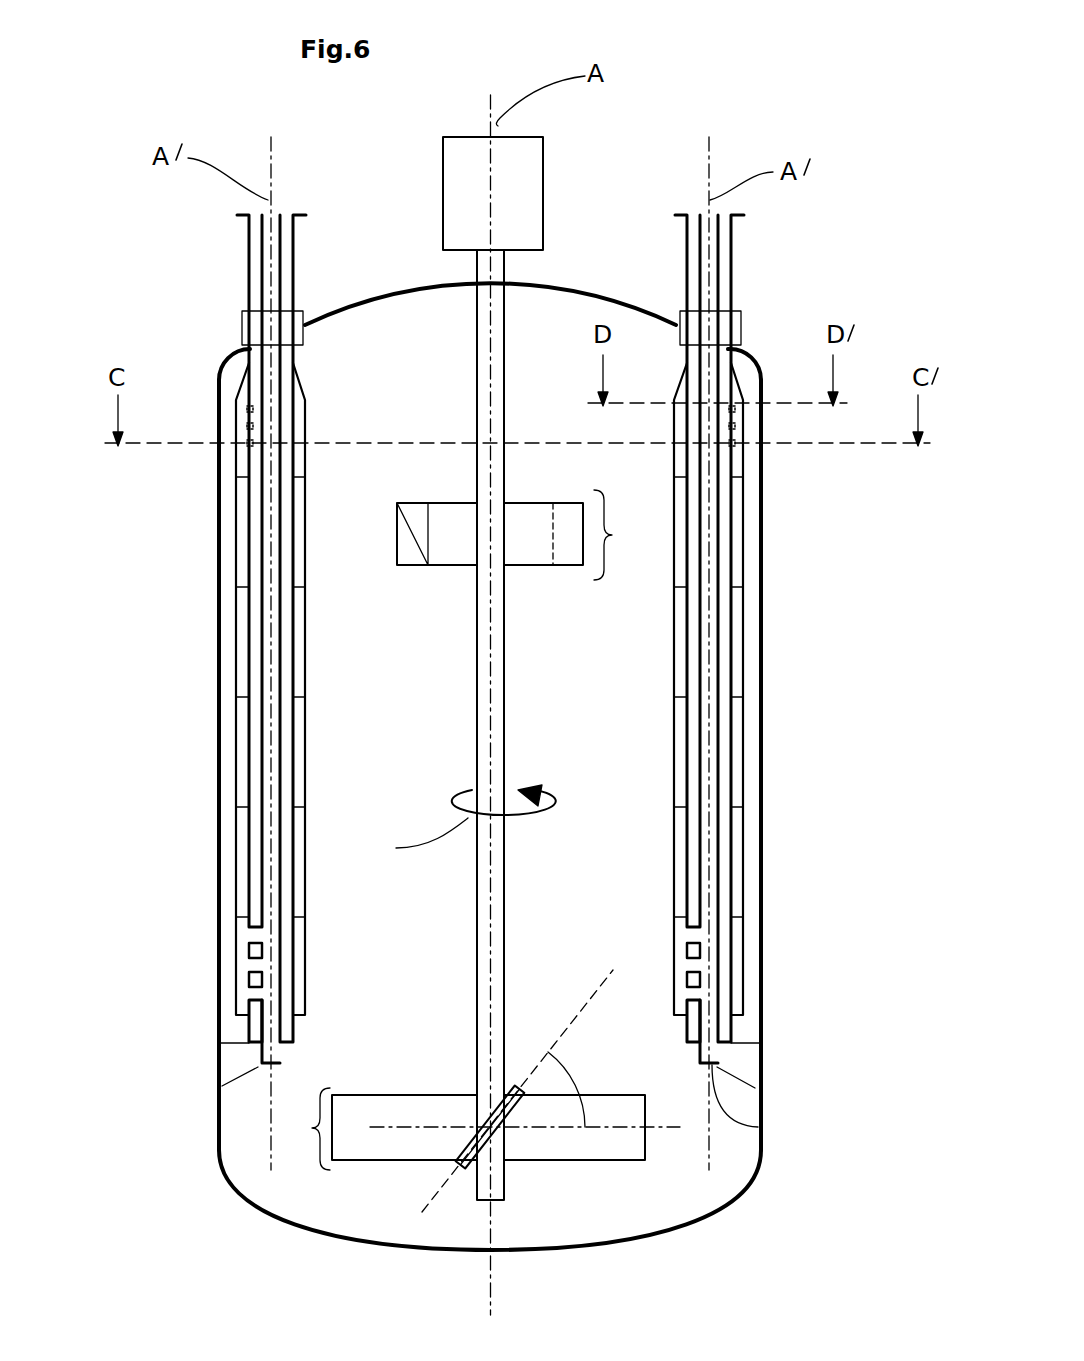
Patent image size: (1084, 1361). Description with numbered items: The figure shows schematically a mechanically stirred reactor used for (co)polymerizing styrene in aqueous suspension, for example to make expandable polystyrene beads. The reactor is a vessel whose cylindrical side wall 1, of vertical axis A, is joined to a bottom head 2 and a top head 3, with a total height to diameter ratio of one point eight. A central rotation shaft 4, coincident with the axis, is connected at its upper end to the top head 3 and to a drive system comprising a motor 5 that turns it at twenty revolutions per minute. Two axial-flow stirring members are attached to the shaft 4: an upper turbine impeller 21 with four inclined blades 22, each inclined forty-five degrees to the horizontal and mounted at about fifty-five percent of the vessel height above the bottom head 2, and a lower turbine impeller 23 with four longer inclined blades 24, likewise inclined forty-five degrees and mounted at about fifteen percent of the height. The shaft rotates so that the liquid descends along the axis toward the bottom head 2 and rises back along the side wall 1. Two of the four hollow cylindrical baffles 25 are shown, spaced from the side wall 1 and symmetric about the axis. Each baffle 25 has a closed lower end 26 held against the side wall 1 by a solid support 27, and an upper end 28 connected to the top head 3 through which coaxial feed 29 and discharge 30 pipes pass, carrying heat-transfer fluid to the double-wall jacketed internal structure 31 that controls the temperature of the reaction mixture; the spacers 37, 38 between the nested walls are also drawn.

The side wall 1 is at (762, 655).
The bottom head 2 is at (562, 1245).
The top head 3 is at (388, 290).
The central rotation shaft 4 is at (478, 900).
The motor 5 is at (465, 183).
The upper turbine impeller 21 is at (523, 535).
The inclined blades 22 is at (410, 513).
The lower turbine impeller 23 is at (478, 1129).
The inclined blades 24 is at (388, 1110).
The baffle 25 is at (237, 645).
The closed lower end 26 is at (283, 1057).
The solid support 27 is at (235, 1060).
The upper end 28 is at (247, 383).
The feed pipe 29 is at (253, 282).
The discharge pipe 30 is at (265, 262).
The double-wall jacketed-type internal structure 31 is at (241, 540).
The upper spacers 37 is at (248, 445).
The lower spacers 38 is at (248, 998).